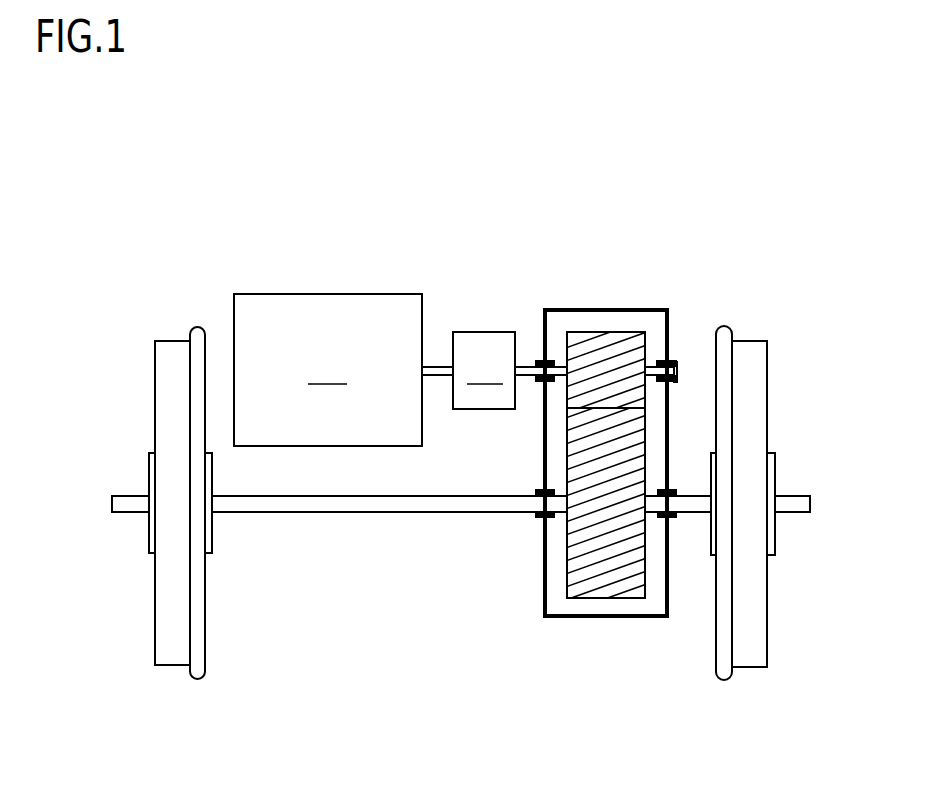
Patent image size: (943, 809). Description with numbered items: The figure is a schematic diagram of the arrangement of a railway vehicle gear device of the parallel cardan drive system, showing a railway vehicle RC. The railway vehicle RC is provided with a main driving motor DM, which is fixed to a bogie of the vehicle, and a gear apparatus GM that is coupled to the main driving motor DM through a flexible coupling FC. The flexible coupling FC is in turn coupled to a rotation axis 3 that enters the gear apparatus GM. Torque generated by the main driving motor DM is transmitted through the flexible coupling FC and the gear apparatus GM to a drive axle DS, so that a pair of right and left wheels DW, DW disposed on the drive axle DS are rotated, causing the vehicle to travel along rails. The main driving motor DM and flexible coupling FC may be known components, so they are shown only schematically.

The railway vehicle RC is at (374, 296).
The main driving motor DM is at (328, 370).
The flexible coupling FC is at (484, 370).
The rotation axis 3 is at (526, 362).
The gear apparatus GM is at (602, 282).
The drive axle DS is at (430, 512).
The wheels DW is at (174, 666).